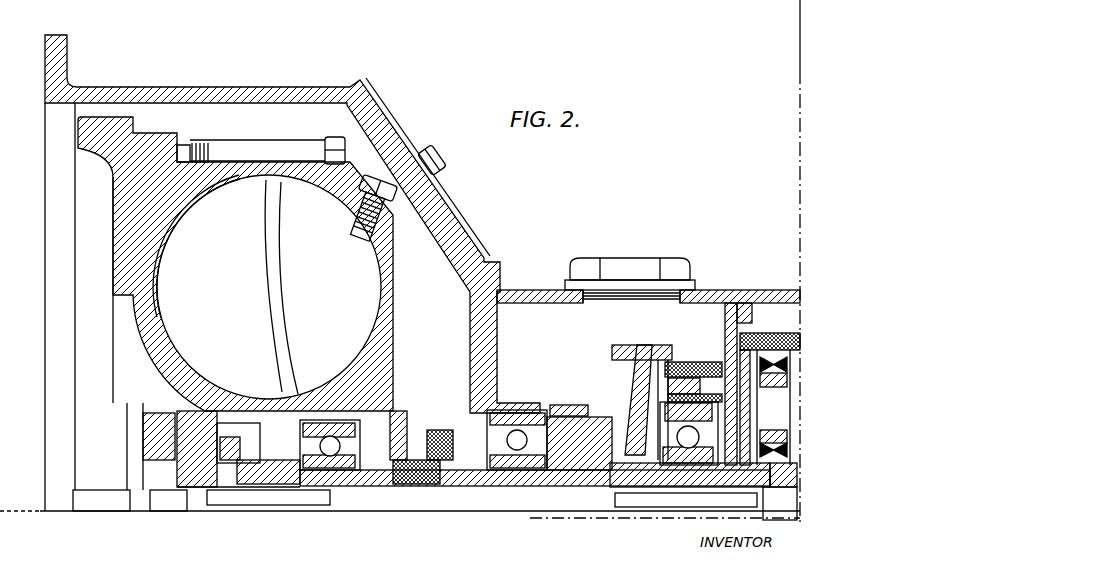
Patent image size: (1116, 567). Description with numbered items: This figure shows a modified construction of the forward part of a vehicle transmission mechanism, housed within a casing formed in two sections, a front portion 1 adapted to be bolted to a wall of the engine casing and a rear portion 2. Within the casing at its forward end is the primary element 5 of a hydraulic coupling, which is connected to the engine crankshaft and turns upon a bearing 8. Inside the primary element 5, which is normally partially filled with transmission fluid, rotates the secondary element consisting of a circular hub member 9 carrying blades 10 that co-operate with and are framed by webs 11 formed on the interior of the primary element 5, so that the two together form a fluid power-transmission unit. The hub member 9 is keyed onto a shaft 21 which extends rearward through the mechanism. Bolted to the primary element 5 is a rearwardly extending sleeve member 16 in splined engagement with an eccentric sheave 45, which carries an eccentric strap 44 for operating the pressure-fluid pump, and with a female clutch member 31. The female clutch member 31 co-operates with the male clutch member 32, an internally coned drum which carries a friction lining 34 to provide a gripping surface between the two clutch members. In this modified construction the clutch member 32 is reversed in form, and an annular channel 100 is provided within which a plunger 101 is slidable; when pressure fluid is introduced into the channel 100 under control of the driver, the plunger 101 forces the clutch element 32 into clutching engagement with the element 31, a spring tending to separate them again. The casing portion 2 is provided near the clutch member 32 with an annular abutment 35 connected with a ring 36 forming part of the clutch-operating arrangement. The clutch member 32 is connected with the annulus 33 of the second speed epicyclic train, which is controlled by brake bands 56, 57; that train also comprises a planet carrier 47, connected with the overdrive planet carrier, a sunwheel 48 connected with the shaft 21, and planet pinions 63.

The front portion of the casing 1 is at (347, 100).
The rear portion of the casing 2 is at (752, 305).
The primary element of the hydraulic coupling 5 is at (186, 104).
The bearing 8 is at (330, 448).
The circular hub member 9 is at (277, 458).
The blades 10 is at (236, 353).
The webs 11 is at (332, 353).
The sleeve member 16 is at (500, 478).
The shaft 21 is at (425, 500).
The female clutch member 31 is at (625, 343).
The male clutch member 32 is at (693, 355).
The second speed annulus 33 is at (757, 336).
The friction lining 34 is at (660, 338).
The annular abutment 35 is at (743, 310).
The ring 36 is at (717, 315).
The eccentric strap 44 is at (560, 415).
The eccentric sheave 45 is at (566, 455).
The second speed planet carrier 47 is at (795, 423).
The second speed sunwheel 48 is at (695, 490).
The brake band 56 is at (718, 303).
The brake band 57 is at (785, 340).
The second speed planet pinions 63 is at (773, 389).
The annular channel 100 is at (636, 366).
The plunger 101 is at (640, 357).